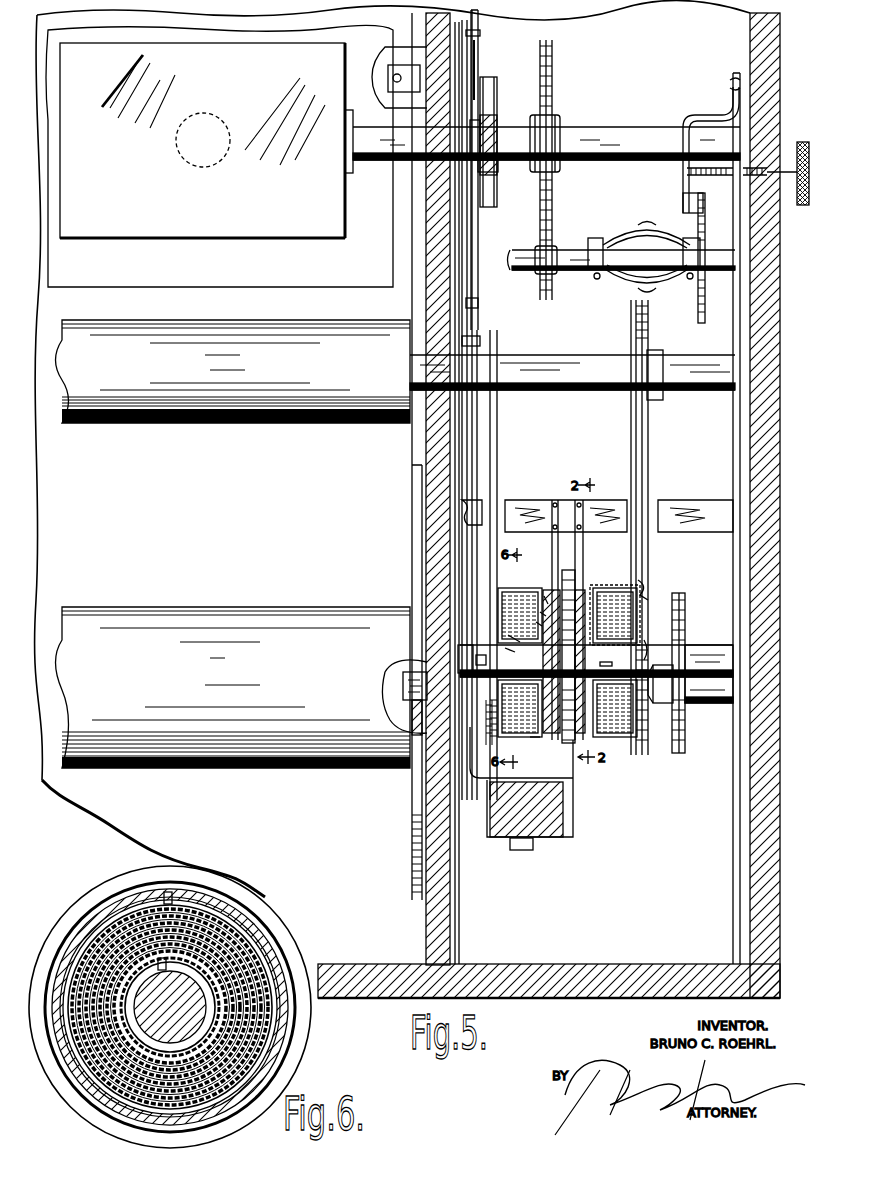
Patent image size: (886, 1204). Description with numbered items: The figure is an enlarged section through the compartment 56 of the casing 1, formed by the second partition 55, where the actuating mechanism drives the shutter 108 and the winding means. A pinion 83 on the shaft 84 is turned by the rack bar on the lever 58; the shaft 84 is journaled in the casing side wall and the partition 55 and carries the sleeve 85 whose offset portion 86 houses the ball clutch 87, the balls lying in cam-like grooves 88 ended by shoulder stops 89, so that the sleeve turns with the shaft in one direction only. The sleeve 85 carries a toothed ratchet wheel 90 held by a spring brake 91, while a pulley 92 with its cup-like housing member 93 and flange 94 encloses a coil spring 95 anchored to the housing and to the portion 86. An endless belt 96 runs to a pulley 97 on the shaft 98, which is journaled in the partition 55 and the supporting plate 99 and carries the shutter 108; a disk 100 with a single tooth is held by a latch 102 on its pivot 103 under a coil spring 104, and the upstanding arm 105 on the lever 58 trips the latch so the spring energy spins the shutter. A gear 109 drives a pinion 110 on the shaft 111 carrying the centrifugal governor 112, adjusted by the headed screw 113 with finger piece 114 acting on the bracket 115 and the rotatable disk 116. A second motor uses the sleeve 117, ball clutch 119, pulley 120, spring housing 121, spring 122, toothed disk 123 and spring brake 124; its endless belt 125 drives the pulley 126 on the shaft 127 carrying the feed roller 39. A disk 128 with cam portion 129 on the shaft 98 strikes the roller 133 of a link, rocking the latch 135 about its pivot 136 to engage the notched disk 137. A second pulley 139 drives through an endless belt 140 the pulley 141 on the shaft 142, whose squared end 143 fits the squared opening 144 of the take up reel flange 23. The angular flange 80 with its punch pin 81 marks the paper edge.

In FIG. 5, the casing 1 is at (770, 555).
In FIG. 5, the take up reel flange 23 is at (416, 840).
In FIG. 5, the feed roller 39 is at (152, 402).
In FIG. 5, the second partition 55 is at (428, 915).
In FIG. 5, the compartment 56 is at (643, 930).
In FIG. 5, the lever 58 is at (547, 825).
In FIG. 5, the angular flange 80 is at (390, 90).
In FIG. 5, the punch pin 81 is at (394, 72).
In FIG. 5, the pinion 83 is at (565, 650).
In FIG. 5, the shaft 84 is at (640, 640).
In FIG. 6, the shaft 84 is at (268, 905).
In FIG. 5, the sleeve 85 is at (545, 590).
In FIG. 6, the sleeve 85 is at (240, 960).
In FIG. 5, the offset portion 86 is at (510, 640).
In FIG. 5, the ball clutch 87 is at (515, 640).
In FIG. 6, the ball clutch 87 is at (190, 960).
In FIG. 5, the grooves 88 is at (510, 650).
In FIG. 6, the grooves 88 is at (215, 935).
In FIG. 6, the shoulder stops 89 is at (92, 905).
In FIG. 5, the toothed ratchet wheel 90 is at (553, 735).
In FIG. 5, the spring brake 91 is at (556, 553).
In FIG. 5, the pulley 92 is at (545, 613).
In FIG. 5, the cup-like housing member 93 is at (548, 598).
In FIG. 6, the cup-like housing member 93 is at (137, 880).
In FIG. 5, the flange 94 is at (535, 738).
In FIG. 6, the flange 94 is at (295, 1015).
In FIG. 5, the coil spring 95 is at (540, 623).
In FIG. 6, the coil spring 95 is at (288, 1040).
In FIG. 5, the endless belt 96 is at (492, 458).
In FIG. 5, the pulley 97 is at (490, 80).
In FIG. 5, the shaft 98 is at (567, 135).
In FIG. 5, the supporting plate 99 is at (737, 225).
In FIG. 5, the disk 100 is at (484, 100).
In FIG. 5, the latch 102 is at (476, 60).
In FIG. 5, the pivot 103 is at (468, 33).
In FIG. 5, the coil spring 104 is at (472, 45).
In FIG. 5, the upstanding arm 105 is at (474, 275).
In FIG. 5, the shutter 108 is at (260, 222).
In FIG. 5, the gear 109 is at (553, 62).
In FIG. 5, the pinion 110 is at (548, 278).
In FIG. 5, the shaft 111 is at (580, 272).
In FIG. 5, the centrifugal governor 112 is at (608, 238).
In FIG. 5, the headed screw 113 is at (723, 178).
In FIG. 5, the finger piece 114 is at (801, 140).
In FIG. 5, the bracket 115 is at (684, 185).
In FIG. 5, the rotatable disk 116 is at (700, 228).
In FIG. 5, the sleeve 117 is at (626, 664).
In FIG. 5, the ball clutch 119 is at (640, 640).
In FIG. 5, the pulley 120 is at (648, 575).
In FIG. 5, the spring housing 121 is at (603, 587).
In FIG. 5, the spring 122 is at (618, 598).
In FIG. 5, the toothed disk 123 is at (580, 598).
In FIG. 5, the spring brake 124 is at (580, 542).
In FIG. 5, the endless belt 125 is at (641, 490).
In FIG. 5, the pulley 126 is at (649, 318).
In FIG. 5, the shaft 127 is at (703, 375).
In FIG. 5, the disk 128 is at (478, 122).
In FIG. 5, the cam portion 129 is at (495, 162).
In FIG. 5, the pin or roller 133 is at (453, 140).
In FIG. 5, the latch 135 is at (466, 218).
In FIG. 5, the pivot 136 is at (470, 303).
In FIG. 5, the disk 137 is at (466, 340).
In FIG. 5, the second pulley 139 is at (686, 608).
In FIG. 5, the endless belt 140 is at (676, 630).
In FIG. 5, the pulley 141 is at (676, 730).
In FIG. 5, the shaft 142 is at (717, 705).
In FIG. 5, the squared end 143 is at (403, 683).
In FIG. 5, the squared opening 144 is at (417, 738).